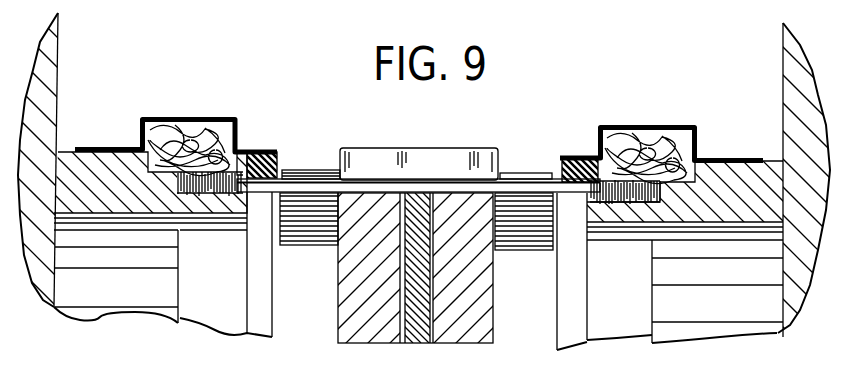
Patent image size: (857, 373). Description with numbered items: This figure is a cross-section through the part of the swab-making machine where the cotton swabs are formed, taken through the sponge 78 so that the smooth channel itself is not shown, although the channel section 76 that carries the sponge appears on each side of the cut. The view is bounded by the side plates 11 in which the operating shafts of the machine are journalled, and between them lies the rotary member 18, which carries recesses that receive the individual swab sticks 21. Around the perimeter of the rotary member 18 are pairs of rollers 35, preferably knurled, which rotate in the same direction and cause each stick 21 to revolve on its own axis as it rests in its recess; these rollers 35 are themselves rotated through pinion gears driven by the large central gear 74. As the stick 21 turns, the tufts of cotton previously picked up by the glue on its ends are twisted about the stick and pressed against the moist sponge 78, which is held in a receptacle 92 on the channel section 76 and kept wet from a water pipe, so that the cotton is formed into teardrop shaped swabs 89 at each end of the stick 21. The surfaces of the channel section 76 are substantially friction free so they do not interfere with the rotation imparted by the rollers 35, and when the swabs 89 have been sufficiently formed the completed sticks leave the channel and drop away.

The side plate 11 is at (45, 108).
The rotary member 18 is at (480, 308).
The swab stick 21 is at (313, 185).
The roller 35 is at (316, 230).
The central gear 74 is at (421, 328).
The channel section 76 is at (217, 194).
The sponge 78 is at (190, 134).
The teardrop shaped swab 89 is at (185, 192).
The receptacle 92 is at (219, 118).